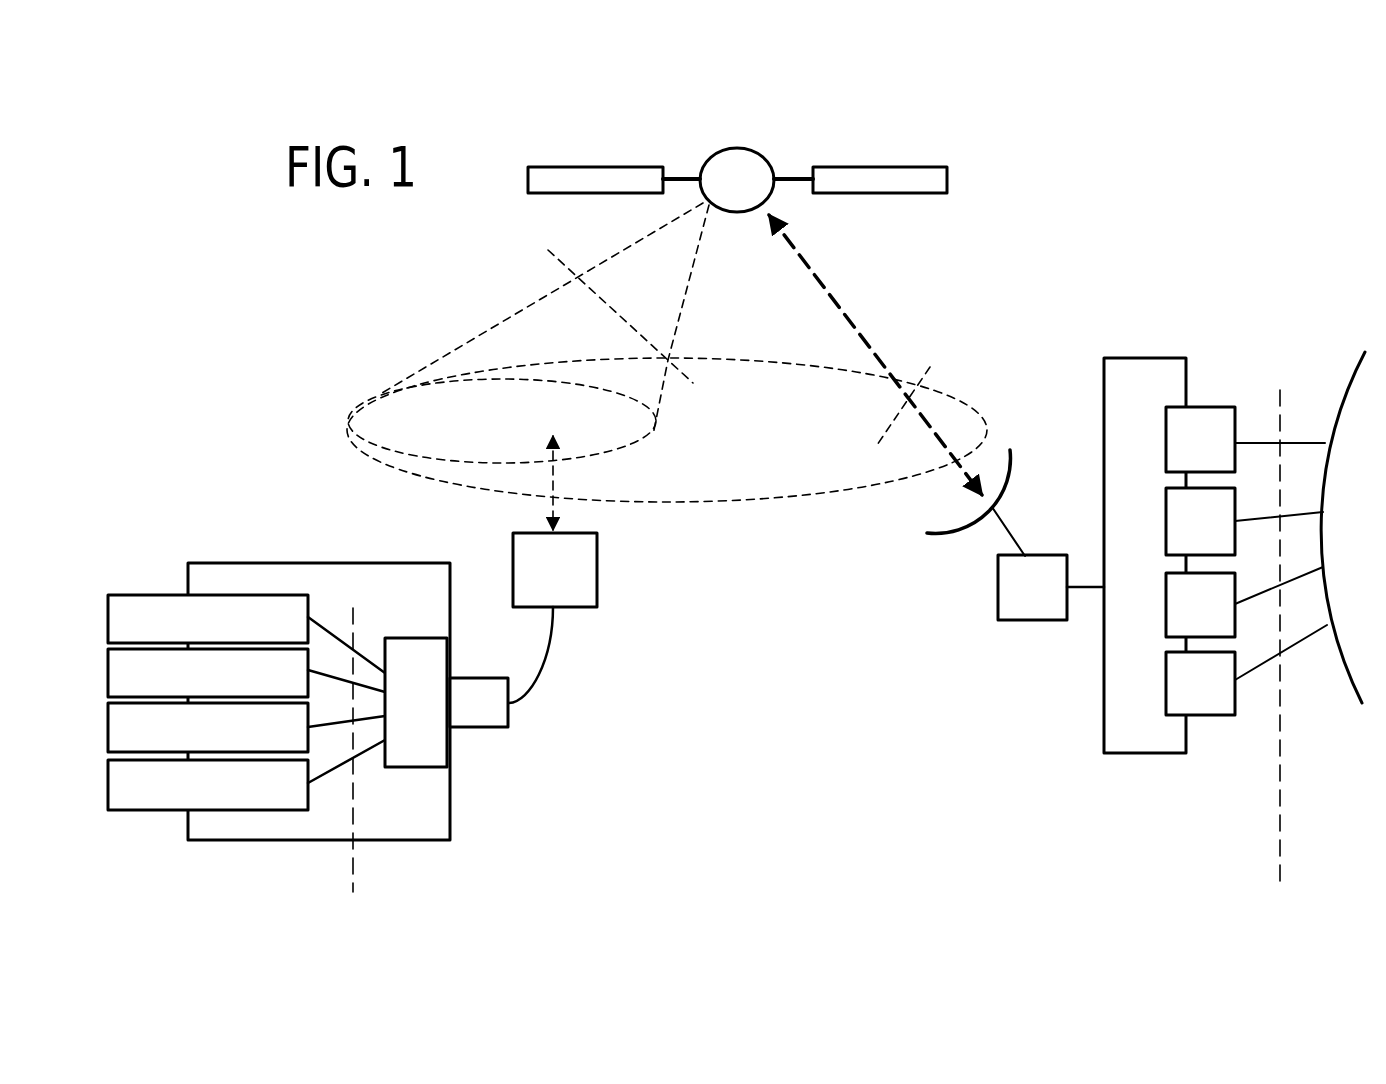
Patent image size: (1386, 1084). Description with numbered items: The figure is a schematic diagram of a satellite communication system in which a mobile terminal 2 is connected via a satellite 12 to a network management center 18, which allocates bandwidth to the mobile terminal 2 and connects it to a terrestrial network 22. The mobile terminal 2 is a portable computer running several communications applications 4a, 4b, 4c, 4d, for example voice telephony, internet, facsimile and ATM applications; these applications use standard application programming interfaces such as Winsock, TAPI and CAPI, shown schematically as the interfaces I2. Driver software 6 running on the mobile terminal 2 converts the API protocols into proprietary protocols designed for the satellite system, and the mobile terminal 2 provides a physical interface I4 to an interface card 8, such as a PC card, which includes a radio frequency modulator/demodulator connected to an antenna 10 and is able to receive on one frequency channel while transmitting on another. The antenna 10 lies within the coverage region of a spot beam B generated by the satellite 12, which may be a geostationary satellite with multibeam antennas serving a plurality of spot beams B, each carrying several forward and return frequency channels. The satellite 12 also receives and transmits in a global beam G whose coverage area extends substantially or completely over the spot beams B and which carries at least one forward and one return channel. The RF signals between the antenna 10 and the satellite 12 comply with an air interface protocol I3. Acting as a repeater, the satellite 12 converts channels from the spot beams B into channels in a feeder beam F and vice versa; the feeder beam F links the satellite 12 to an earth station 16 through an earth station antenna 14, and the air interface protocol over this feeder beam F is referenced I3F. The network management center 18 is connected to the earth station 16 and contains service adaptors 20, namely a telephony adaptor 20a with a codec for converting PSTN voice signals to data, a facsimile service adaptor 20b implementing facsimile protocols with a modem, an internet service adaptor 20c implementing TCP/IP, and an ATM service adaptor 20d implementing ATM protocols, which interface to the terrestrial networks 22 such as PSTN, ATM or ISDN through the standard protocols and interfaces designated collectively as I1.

The mobile terminal 2 is at (246, 563).
The communications application 4a is at (223, 634).
The communications application 4b is at (223, 688).
The communications application 4c is at (223, 743).
The communications application 4d is at (223, 798).
The driver software 6 is at (408, 638).
The interface card 8 is at (480, 678).
The antenna 10 is at (513, 553).
The satellite 12 is at (737, 148).
The earth station antenna 14 is at (1011, 452).
The earth station 16 is at (996, 593).
The network management center 18 is at (1136, 358).
The service adaptors 20 is at (1220, 501).
The telephony adaptor 20a is at (1166, 436).
The facsimile service adaptor 20b is at (1166, 517).
The internet service adaptor 20c is at (1165, 598).
The ATM service adaptor 20d is at (1165, 664).
The terrestrial network 22 is at (1374, 549).
The spot beam B is at (511, 428).
The feeder beam F is at (825, 293).
The global beam G is at (737, 500).
The standard protocols and interfaces I1 is at (1277, 837).
The application programming interfaces I2 is at (355, 866).
The air interface protocol I3 is at (706, 390).
The feeder beam air interface protocol I3F is at (930, 362).
The physical interface I4 is at (478, 727).